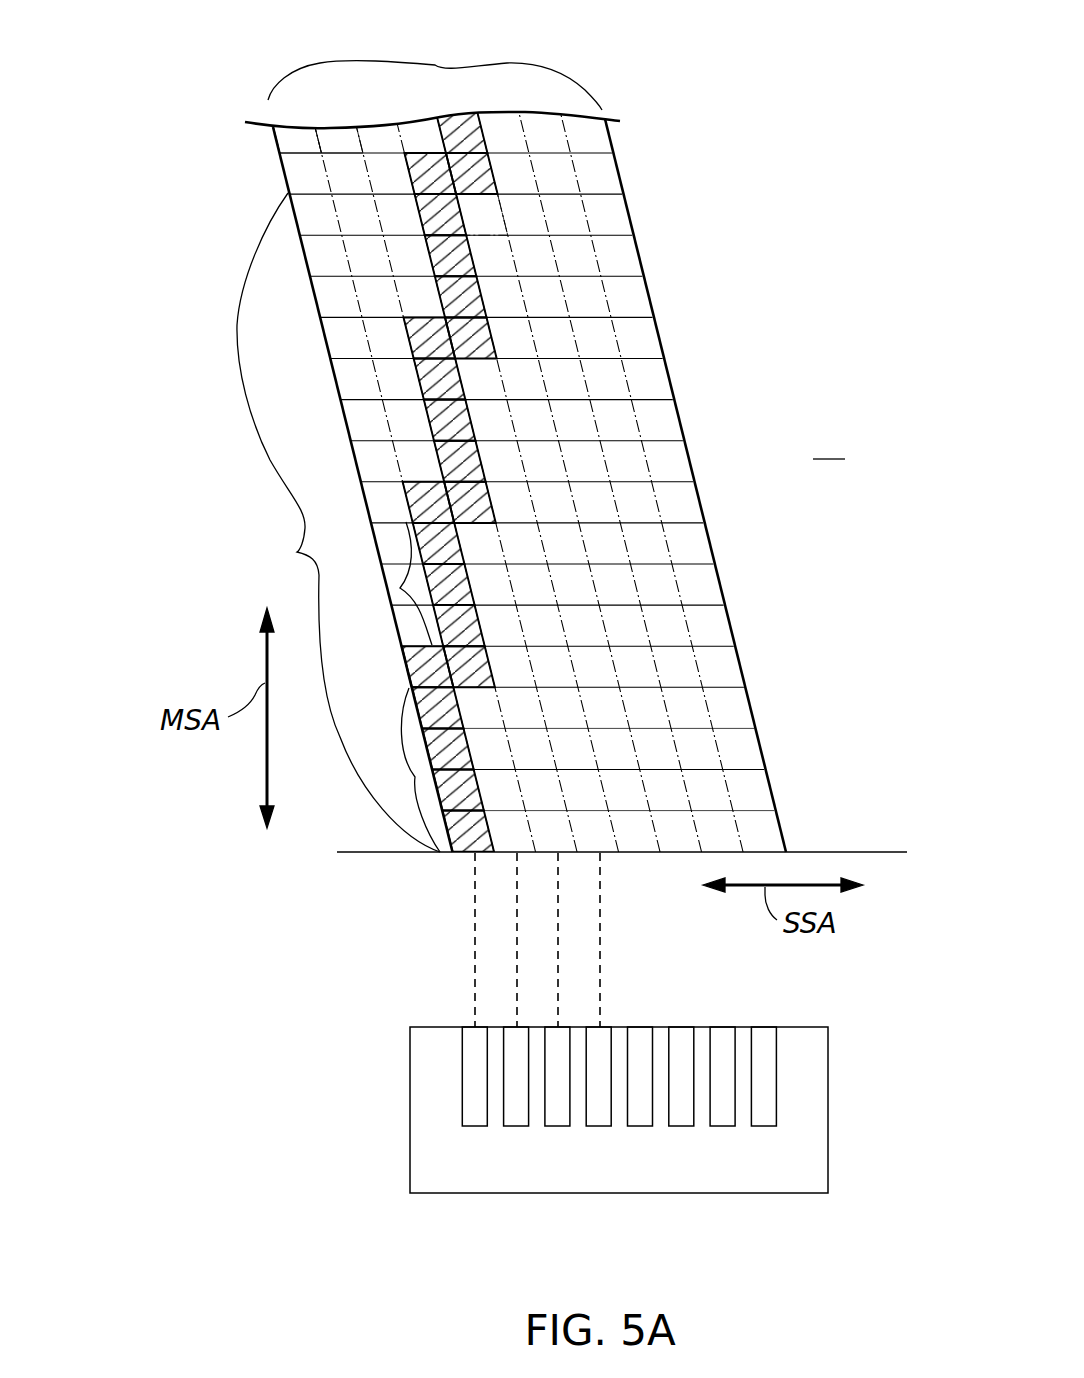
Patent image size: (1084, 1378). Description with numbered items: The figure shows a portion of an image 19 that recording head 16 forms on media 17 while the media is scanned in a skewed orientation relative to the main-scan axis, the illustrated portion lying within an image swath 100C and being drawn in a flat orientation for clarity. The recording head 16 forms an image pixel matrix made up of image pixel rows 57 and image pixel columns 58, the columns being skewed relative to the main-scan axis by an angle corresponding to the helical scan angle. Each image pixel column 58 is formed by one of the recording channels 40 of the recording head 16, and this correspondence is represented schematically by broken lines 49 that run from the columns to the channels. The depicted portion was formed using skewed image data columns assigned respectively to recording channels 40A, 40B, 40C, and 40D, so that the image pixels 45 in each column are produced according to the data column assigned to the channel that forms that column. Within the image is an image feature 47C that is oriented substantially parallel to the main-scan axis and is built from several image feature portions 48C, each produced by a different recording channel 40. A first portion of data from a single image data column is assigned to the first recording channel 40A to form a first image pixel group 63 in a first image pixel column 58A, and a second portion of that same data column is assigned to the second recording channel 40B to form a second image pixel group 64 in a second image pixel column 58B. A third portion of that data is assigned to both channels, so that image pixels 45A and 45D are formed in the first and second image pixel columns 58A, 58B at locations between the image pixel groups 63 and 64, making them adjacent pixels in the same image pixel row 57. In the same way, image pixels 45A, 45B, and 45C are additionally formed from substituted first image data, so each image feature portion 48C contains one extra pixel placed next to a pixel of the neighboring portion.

The image pixel columns 58 is at (435, 65).
The first image pixel column 58A is at (293, 140).
The second image pixel column 58B is at (337, 140).
The image swath 100C is at (245, 210).
The image feature 47C is at (497, 210).
The image feature portions 48C is at (463, 253).
The image 19 is at (668, 290).
The image pixel 45C is at (428, 338).
The image pixels 45 is at (632, 502).
The media 17 is at (831, 443).
The image pixel 45B is at (412, 494).
The image pixel 45D is at (477, 671).
The image pixel rows 57 is at (297, 552).
The second image pixel group 64 is at (398, 588).
The image pixel 45A is at (435, 672).
The first image pixel group 63 is at (413, 777).
The broken lines 49 is at (513, 958).
The recording channels 40 is at (626, 1093).
The recording head 16 is at (805, 1083).
The first recording channel 40A is at (477, 1108).
The second recording channel 40B is at (518, 1107).
The recording channel 40C is at (558, 1113).
The recording channel 40D is at (602, 1107).